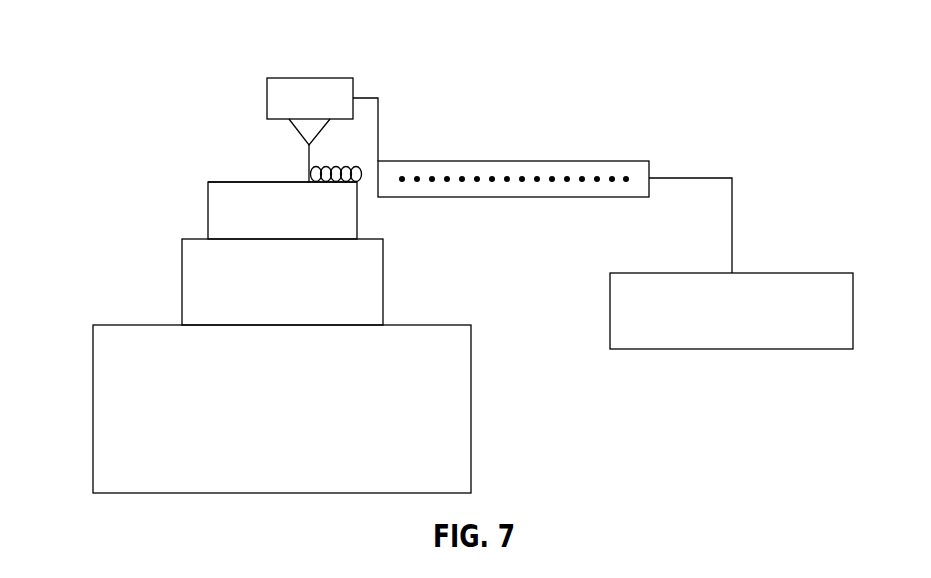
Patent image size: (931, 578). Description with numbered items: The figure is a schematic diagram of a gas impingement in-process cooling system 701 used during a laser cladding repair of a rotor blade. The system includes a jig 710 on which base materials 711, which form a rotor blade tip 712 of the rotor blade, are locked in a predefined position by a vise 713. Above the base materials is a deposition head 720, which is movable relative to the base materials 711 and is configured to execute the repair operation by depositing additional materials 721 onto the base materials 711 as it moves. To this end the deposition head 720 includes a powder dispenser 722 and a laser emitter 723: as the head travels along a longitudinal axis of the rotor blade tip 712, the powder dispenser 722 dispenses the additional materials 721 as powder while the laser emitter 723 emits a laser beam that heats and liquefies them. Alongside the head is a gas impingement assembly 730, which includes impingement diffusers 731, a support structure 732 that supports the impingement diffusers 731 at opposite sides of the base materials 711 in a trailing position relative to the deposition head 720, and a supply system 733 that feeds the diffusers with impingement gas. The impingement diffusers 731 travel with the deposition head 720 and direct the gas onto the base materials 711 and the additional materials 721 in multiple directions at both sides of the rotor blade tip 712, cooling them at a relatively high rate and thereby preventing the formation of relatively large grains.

The gas impingement in-process cooling system 701 is at (607, 101).
The jig 710 is at (108, 423).
The base materials 711 is at (278, 180).
The rotor blade tip 712 is at (224, 217).
The vise 713 is at (192, 288).
The deposition head 720 is at (307, 77).
The additional materials 721 is at (335, 178).
The powder dispenser 722 is at (305, 124).
The laser emitter 723 is at (307, 145).
The gas impingement assembly 730 is at (665, 168).
The impingement diffusers 731 is at (512, 160).
The support structure 732 is at (380, 130).
The supply system 733 is at (733, 227).